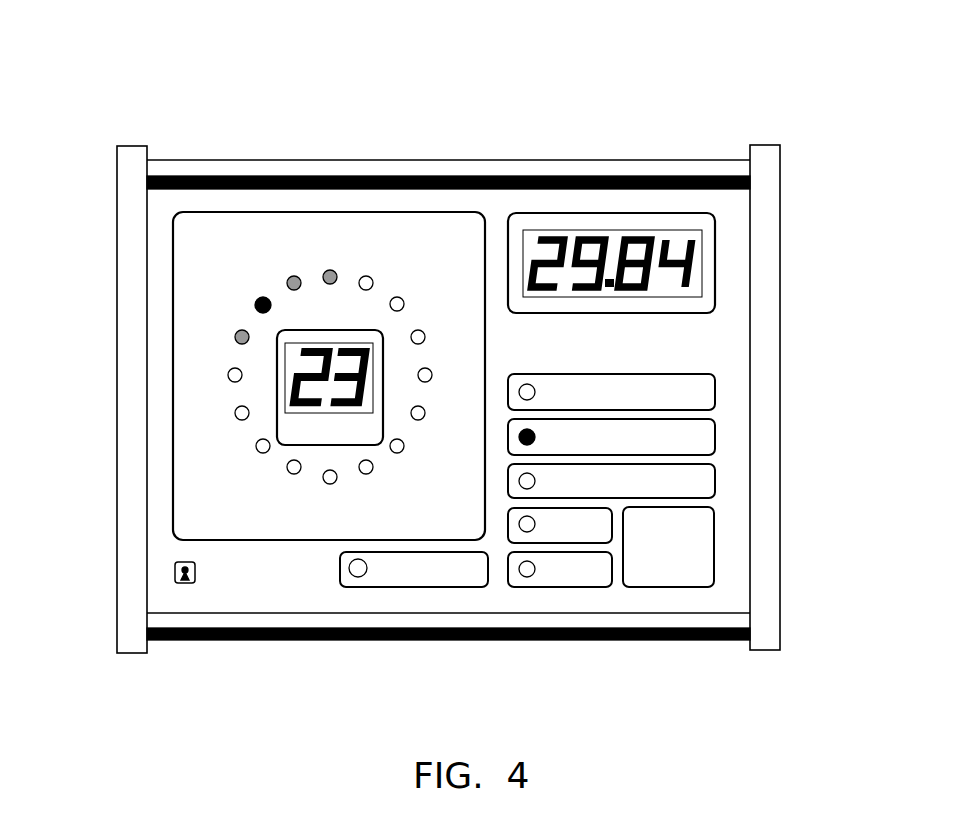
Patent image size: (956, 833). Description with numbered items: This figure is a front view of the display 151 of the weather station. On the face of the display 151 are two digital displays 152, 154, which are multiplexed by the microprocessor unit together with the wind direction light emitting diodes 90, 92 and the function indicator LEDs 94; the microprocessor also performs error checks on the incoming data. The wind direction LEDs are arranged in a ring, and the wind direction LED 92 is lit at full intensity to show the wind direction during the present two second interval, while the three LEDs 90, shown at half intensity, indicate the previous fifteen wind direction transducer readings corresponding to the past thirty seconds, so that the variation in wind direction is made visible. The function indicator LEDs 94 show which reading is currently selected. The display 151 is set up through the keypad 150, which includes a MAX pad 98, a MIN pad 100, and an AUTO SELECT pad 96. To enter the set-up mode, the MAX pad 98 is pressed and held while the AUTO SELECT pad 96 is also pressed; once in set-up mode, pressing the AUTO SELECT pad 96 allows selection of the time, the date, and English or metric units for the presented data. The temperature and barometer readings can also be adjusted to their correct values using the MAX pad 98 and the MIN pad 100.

The display 151 is at (368, 148).
The keypad 150 is at (747, 347).
The digital display 152 is at (690, 250).
The digital display 154 is at (293, 388).
The wind direction light emitting diodes 90 is at (287, 280).
The wind direction light emitting diode 92 is at (255, 303).
The function indicator LEDs 94 is at (535, 436).
The AUTO SELECT pad 96 is at (702, 525).
The MAX pad 98 is at (534, 530).
The MIN pad 100 is at (534, 575).